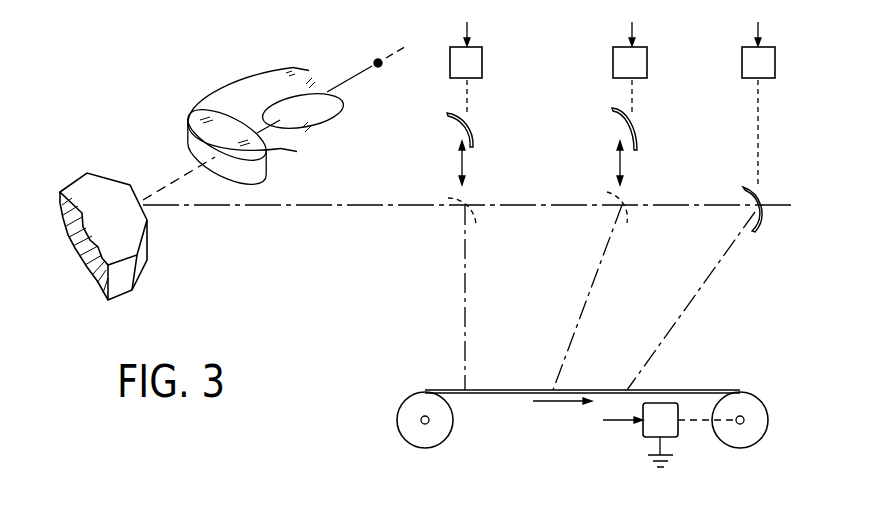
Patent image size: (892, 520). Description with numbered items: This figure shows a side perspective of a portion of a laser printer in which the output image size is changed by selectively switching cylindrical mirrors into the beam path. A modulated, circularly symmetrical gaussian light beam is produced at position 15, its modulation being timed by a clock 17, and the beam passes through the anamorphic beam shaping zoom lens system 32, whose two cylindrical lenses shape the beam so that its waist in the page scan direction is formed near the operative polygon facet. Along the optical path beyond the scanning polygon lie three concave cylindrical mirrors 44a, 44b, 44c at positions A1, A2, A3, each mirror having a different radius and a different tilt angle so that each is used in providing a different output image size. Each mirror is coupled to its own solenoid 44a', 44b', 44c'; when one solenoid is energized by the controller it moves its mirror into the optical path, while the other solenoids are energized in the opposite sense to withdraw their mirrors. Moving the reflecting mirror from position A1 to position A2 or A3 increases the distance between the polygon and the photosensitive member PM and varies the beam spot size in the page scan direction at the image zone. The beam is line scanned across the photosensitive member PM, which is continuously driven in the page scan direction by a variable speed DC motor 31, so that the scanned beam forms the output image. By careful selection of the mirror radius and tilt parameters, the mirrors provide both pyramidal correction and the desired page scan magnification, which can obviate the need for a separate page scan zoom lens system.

The anamorphic beam shaping zoom lens system 32 is at (243, 93).
The position 15 is at (376, 59).
The solenoid 44a' is at (488, 67).
The cylindrical mirror 44a is at (483, 169).
The solenoid 44b' is at (602, 67).
The cylindrical mirror 44b is at (647, 165).
The solenoid 44c' is at (731, 105).
The cylindrical mirror 44c is at (772, 216).
The clock 17 is at (517, 388).
The photosensitive member PM is at (705, 390).
The variable speed DC motor 31 is at (671, 430).
The position A1 is at (494, 241).
The position A2 is at (643, 242).
The position A3 is at (781, 195).